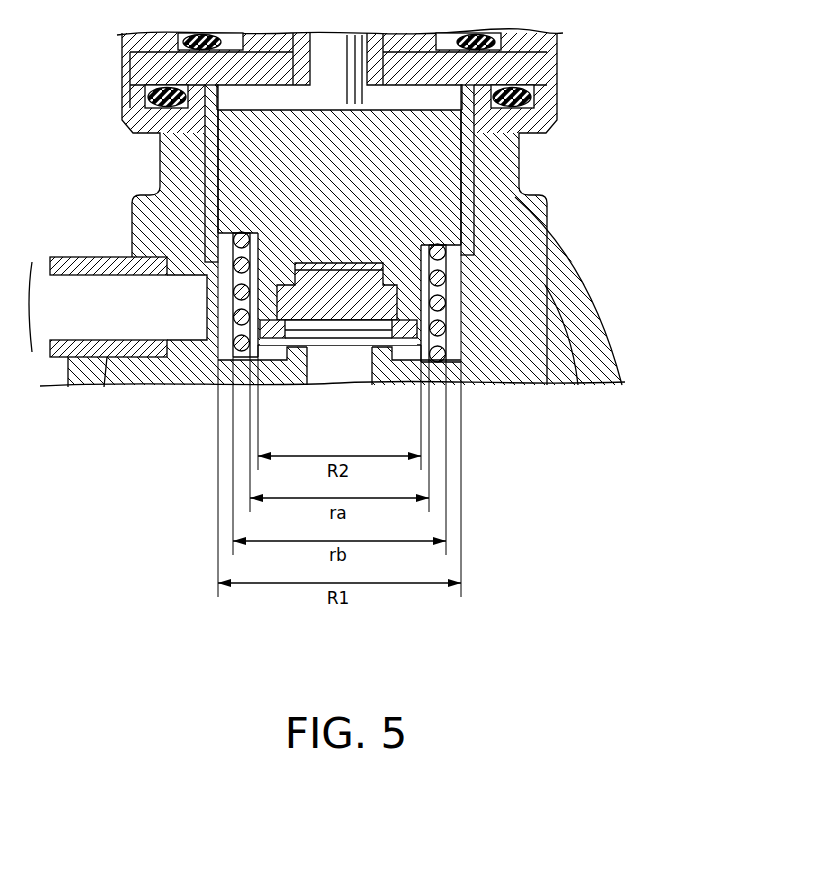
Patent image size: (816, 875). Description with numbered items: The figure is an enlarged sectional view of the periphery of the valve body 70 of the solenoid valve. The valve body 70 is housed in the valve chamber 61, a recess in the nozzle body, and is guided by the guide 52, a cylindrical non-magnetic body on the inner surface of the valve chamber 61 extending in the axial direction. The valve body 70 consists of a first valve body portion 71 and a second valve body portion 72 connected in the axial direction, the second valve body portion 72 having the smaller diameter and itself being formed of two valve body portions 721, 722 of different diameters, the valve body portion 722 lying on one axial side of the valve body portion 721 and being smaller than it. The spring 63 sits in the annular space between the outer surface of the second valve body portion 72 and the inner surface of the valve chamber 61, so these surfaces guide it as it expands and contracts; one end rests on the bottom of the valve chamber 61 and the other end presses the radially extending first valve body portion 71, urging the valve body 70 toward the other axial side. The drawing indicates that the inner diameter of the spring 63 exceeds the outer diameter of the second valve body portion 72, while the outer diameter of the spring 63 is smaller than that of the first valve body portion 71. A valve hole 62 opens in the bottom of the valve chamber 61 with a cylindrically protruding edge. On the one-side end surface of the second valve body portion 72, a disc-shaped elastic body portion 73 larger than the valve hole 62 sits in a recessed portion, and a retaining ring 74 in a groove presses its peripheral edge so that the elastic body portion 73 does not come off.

The guide 52 is at (210, 165).
The valve chamber 61 is at (478, 345).
The valve hole 62 is at (318, 350).
The spring 63 is at (446, 278).
The valve body 70 is at (451, 215).
The first valve body portion 71 is at (452, 175).
The second valve body portion 72 is at (468, 207).
The elastic body portion 73 is at (396, 292).
The retaining ring 74 is at (412, 320).
The valve body portion 721 is at (238, 237).
The valve body portion 722 is at (252, 288).